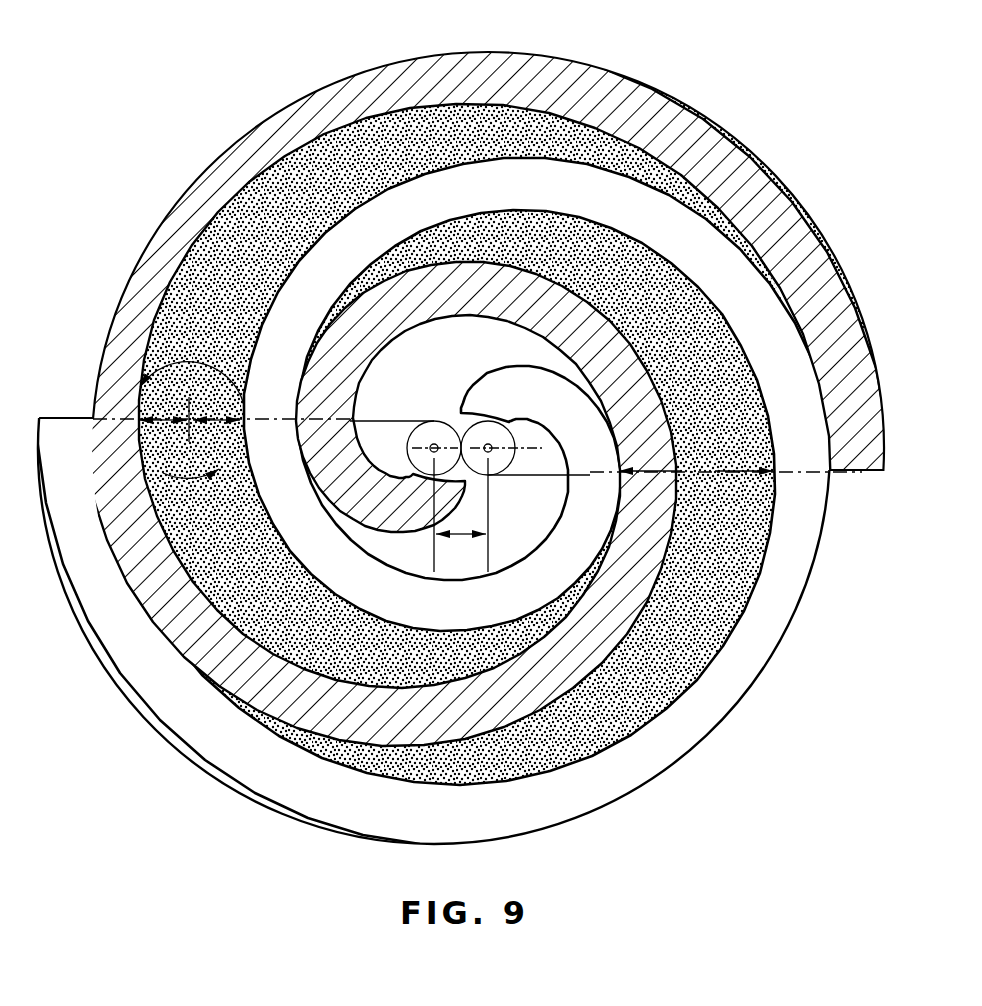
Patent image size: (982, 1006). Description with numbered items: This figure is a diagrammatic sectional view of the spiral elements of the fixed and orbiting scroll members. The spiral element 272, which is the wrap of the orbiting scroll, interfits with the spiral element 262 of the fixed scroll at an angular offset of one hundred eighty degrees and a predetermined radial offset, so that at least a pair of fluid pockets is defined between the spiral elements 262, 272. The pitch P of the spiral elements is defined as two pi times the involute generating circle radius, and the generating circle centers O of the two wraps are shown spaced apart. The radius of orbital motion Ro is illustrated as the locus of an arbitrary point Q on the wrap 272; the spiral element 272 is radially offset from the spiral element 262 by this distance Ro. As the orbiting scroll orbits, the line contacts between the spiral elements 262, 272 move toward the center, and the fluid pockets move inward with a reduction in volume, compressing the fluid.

The spiral element of fixed scroll 262 is at (718, 712).
The spiral element of orbiting scroll 272 is at (521, 66).
The center of fixed scroll base circle (O) and orbiting scroll center (O') O is at (489, 449).
The radius of orbital motion Ro is at (313, 453).
The pitch of the spiral elements P is at (696, 474).
The arbitrary point on wrap of orbiting scroll Q is at (137, 418).